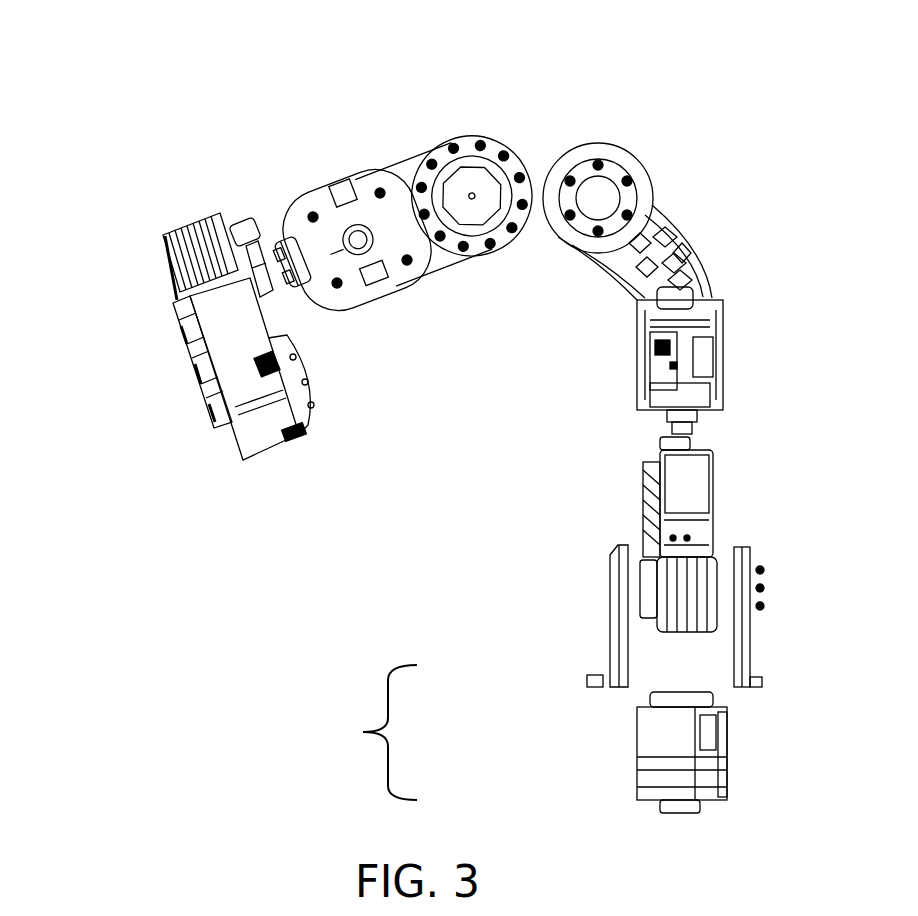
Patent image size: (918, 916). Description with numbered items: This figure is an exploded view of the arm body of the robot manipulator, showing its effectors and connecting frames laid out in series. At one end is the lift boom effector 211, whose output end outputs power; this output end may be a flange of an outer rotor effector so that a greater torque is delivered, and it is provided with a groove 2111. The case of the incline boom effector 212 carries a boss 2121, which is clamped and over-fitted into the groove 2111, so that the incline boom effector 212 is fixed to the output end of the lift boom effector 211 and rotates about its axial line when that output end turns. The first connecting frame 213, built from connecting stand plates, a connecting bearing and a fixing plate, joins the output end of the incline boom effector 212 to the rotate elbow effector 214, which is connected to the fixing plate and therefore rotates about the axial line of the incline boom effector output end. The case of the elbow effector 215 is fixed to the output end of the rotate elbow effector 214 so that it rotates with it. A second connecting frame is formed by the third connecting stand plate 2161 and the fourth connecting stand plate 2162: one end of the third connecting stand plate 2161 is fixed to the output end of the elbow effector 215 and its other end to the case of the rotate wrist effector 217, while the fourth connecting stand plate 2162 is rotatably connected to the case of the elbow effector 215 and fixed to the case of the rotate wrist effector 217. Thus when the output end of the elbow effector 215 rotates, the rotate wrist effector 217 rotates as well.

The lift boom effector 211 is at (228, 307).
The groove 2111 is at (245, 237).
The boss 2121 is at (298, 237).
The incline boom effector 212 is at (405, 200).
The first connecting frame 213 is at (619, 165).
The rotate elbow effector 214 is at (695, 352).
The elbow effector 215 is at (697, 510).
The third connecting stand plate 2161 is at (613, 618).
The fourth connecting stand plate 2162 is at (737, 683).
The rotate wrist effector 217 is at (712, 777).